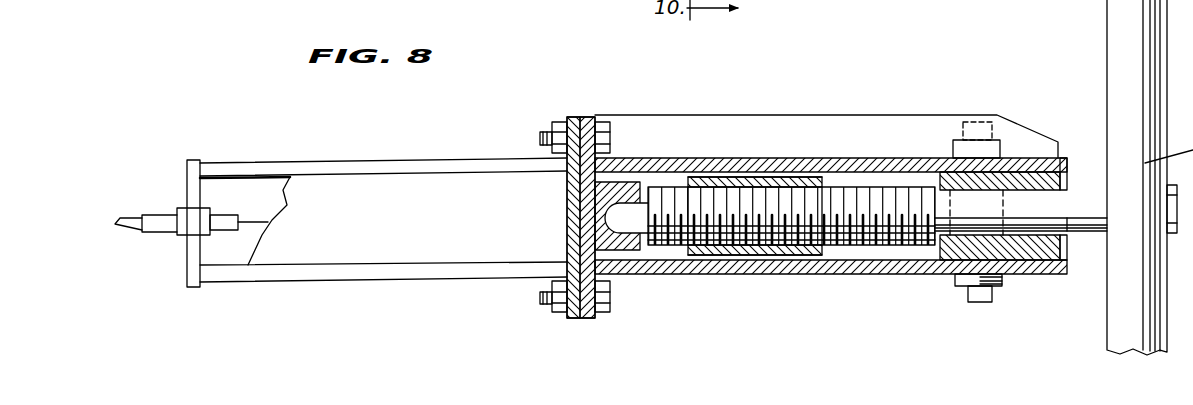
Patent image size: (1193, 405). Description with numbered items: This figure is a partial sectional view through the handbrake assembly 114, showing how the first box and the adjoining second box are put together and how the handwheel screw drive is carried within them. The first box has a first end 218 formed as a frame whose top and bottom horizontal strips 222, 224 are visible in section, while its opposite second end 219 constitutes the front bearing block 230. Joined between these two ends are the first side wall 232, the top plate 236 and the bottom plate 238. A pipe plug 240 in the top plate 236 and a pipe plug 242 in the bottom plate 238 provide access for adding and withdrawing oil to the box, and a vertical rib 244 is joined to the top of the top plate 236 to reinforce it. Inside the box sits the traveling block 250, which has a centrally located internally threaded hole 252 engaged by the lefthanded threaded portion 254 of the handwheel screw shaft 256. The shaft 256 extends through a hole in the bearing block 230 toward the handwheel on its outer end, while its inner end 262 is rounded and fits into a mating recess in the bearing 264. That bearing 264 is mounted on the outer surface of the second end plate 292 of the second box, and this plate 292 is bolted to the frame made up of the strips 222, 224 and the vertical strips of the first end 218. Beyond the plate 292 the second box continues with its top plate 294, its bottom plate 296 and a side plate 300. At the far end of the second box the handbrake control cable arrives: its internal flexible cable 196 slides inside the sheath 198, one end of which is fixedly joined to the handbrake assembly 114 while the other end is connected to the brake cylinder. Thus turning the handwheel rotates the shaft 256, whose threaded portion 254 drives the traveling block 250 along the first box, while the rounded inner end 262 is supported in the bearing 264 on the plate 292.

The handbrake assembly 114 is at (562, 88).
The internal flexible cable 196 is at (247, 217).
The sheath 198 is at (120, 216).
The first end 218 is at (620, 138).
The second end 219 is at (1072, 176).
The top horizontal strip 222 is at (590, 117).
The bottom horizontal strip 224 is at (596, 318).
The front bearing block 230 is at (1047, 258).
The first side wall 232 is at (869, 262).
The top plate 236 is at (830, 163).
The bottom plate 238 is at (780, 263).
The pipe plug 240 is at (984, 121).
The pipe plug 242 is at (968, 290).
The vertical rib 244 is at (770, 130).
The traveling block 250 is at (722, 254).
The internally threaded hole 252 is at (697, 188).
The lefthanded threaded portion 254 is at (878, 200).
The handwheel screw shaft 256 is at (1093, 236).
The inner end 262 is at (612, 238).
The bearing 264 is at (612, 193).
The second end plate 292 is at (567, 117).
The top plate 294 is at (250, 164).
The bottom plate 296 is at (348, 272).
The side plate 300 is at (392, 228).